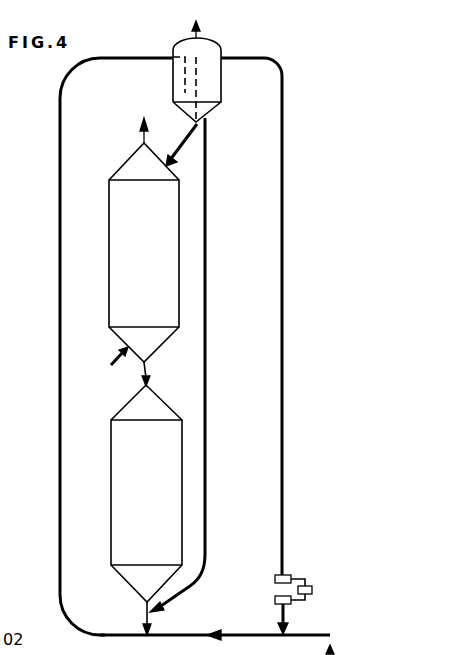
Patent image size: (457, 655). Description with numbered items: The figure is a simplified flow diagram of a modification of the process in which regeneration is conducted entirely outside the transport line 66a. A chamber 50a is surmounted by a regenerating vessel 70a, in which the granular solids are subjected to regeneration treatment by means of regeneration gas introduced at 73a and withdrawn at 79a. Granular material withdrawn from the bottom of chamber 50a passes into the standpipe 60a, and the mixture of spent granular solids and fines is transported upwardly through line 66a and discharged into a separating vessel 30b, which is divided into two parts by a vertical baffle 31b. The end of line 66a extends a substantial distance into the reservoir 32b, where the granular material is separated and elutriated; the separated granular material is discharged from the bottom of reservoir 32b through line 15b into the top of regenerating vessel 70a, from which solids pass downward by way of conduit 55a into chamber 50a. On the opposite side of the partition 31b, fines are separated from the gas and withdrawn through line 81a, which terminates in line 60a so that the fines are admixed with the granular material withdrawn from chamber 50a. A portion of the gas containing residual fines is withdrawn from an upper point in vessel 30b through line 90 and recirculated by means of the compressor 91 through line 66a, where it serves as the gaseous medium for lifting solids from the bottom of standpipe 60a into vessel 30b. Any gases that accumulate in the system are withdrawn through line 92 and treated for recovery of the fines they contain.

The line 92 is at (200, 36).
The reservoir 32b is at (173, 87).
The vertical baffle 31b is at (197, 85).
The separating vessel 30b is at (221, 97).
The line 90 is at (282, 108).
The line 15b is at (180, 148).
The regeneration gas outlet 79a is at (143, 137).
The line 81a is at (208, 185).
The regenerating vessel 70a is at (110, 262).
The regeneration gas inlet 73a is at (113, 362).
The connecting conduit 55a is at (150, 368).
The chamber 50a is at (110, 476).
The transport line 66a is at (67, 606).
The standpipe 60a is at (152, 622).
The compressor 91 is at (308, 585).